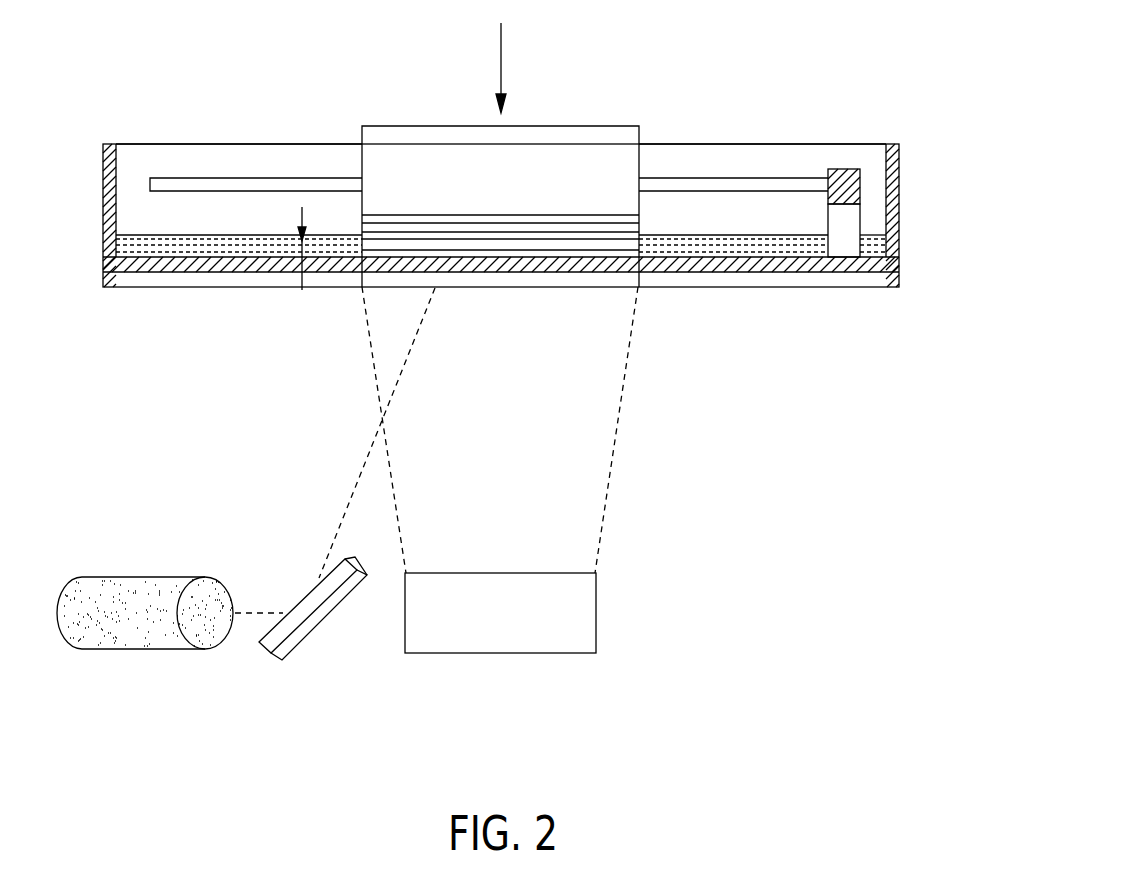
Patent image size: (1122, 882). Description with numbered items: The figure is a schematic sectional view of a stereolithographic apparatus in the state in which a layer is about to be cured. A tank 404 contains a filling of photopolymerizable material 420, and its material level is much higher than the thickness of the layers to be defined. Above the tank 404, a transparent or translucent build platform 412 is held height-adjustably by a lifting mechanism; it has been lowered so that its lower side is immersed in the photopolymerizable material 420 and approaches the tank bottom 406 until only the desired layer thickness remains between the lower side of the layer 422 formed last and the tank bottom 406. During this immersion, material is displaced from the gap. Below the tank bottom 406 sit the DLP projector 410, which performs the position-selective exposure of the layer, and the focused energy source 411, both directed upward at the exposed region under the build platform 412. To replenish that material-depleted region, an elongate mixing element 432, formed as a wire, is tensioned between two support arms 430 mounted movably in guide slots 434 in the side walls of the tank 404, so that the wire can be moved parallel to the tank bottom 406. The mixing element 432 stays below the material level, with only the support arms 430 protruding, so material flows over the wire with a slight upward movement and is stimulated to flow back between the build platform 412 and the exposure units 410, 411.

The tank 404 is at (905, 158).
The tank bottom 406 is at (632, 263).
The DLP projector 410 is at (603, 613).
The focused energy source 411 is at (177, 560).
The build platform 412 is at (641, 133).
The photopolymerizable material 420 is at (151, 250).
The layer formed last 422 is at (362, 246).
The support arms 430 is at (845, 182).
The mixing element 432 is at (844, 244).
The guide slots 434 is at (765, 185).